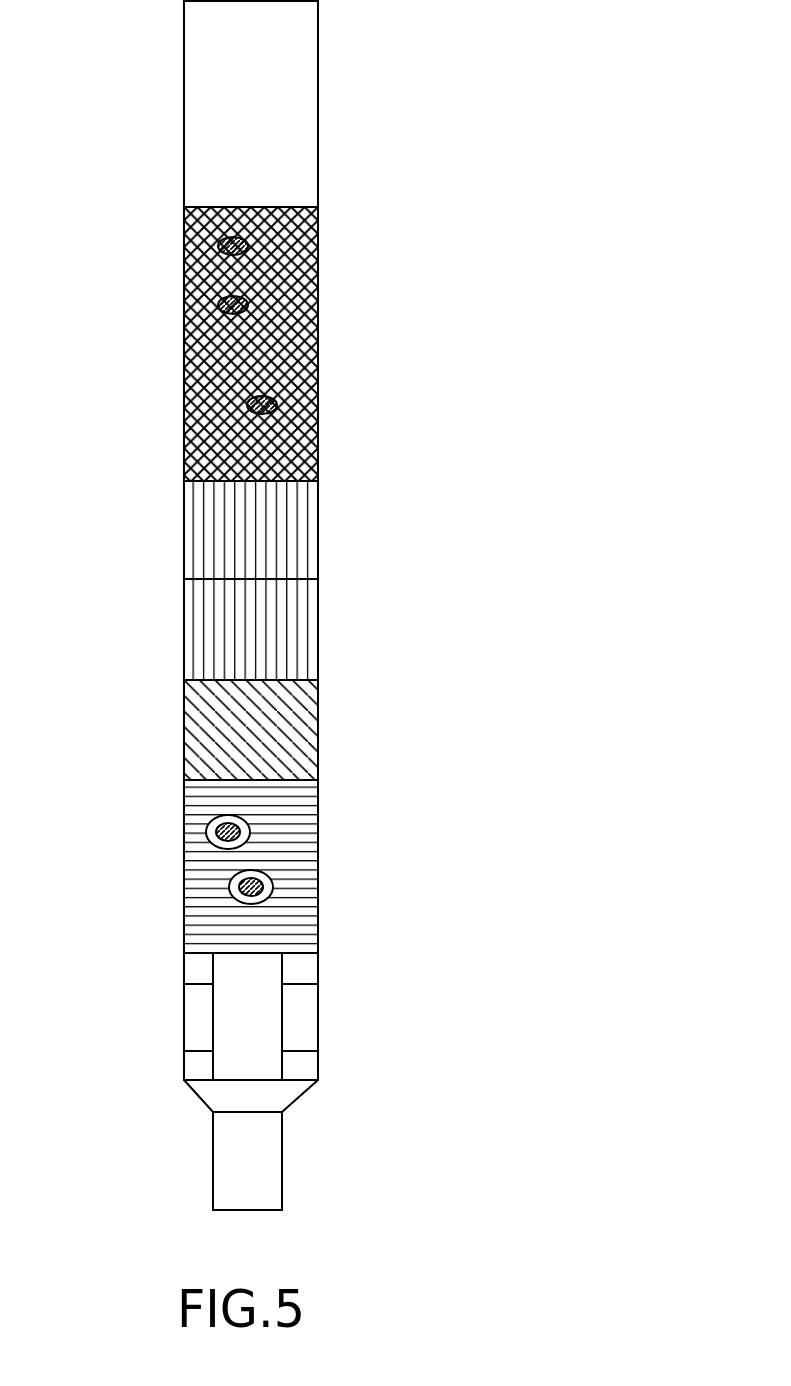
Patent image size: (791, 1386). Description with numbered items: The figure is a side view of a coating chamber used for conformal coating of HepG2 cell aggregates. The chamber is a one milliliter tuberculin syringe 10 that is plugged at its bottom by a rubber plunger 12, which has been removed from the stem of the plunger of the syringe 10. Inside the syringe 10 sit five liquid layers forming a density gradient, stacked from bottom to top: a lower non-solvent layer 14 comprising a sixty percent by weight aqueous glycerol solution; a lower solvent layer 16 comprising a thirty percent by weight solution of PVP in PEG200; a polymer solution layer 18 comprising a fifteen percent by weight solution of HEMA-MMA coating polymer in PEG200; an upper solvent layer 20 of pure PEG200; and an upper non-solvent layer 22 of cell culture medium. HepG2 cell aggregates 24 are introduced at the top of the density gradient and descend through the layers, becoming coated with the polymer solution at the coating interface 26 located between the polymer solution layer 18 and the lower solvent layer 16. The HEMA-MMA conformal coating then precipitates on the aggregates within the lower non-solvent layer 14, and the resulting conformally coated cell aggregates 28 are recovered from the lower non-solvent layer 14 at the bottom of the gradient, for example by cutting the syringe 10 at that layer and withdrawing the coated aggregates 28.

The tuberculin syringe 10 is at (322, 83).
The rubber plunger 12 is at (196, 1022).
The lower non-solvent layer 14 is at (303, 860).
The lower solvent layer 16 is at (301, 730).
The polymer solution layer 18 is at (290, 627).
The upper solvent layer 20 is at (319, 505).
The upper non-solvent layer 22 is at (303, 262).
The HepG2 cell aggregates 24 is at (223, 240).
The coating interface 26 is at (174, 680).
The conformally coated cell aggregates 28 is at (205, 834).